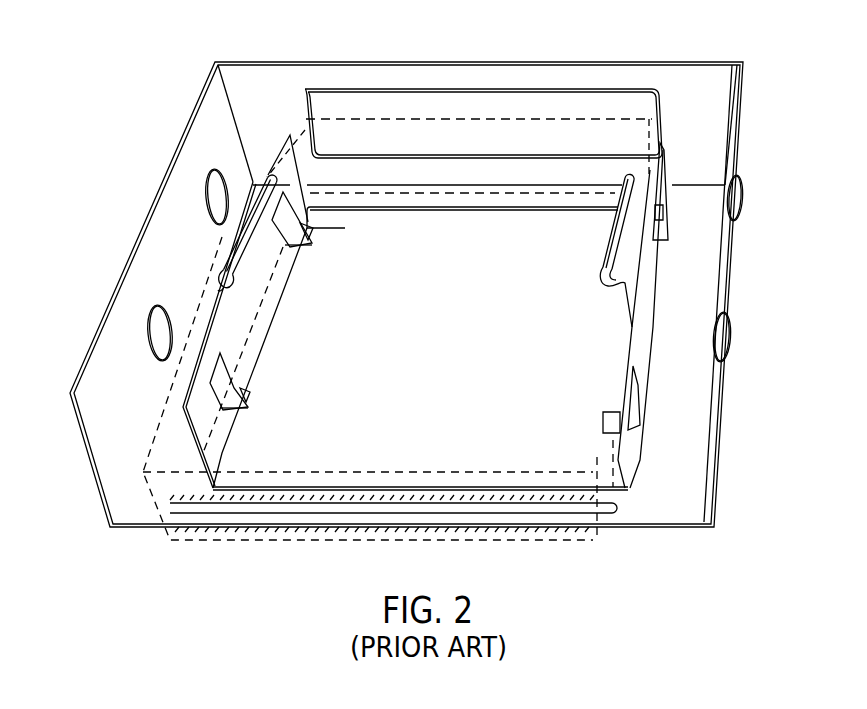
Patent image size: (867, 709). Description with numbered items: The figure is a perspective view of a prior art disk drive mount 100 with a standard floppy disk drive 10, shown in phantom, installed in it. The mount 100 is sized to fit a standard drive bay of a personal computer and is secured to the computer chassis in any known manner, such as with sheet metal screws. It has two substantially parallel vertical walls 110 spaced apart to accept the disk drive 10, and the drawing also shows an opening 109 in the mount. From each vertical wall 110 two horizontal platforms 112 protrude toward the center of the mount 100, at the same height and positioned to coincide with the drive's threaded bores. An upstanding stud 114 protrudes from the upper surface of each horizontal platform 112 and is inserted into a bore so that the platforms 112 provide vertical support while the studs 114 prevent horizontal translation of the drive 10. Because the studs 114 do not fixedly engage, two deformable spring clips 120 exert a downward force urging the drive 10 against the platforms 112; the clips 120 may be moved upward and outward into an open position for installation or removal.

The floppy disk drive 10 is at (556, 120).
The disk drive mount 100 is at (203, 143).
The opening in frame back wall 109 is at (390, 102).
The vertical wall 110 is at (215, 447).
The horizontal platform 112 is at (312, 246).
The upstanding stud 114 is at (305, 235).
The spring clip 120 is at (268, 175).